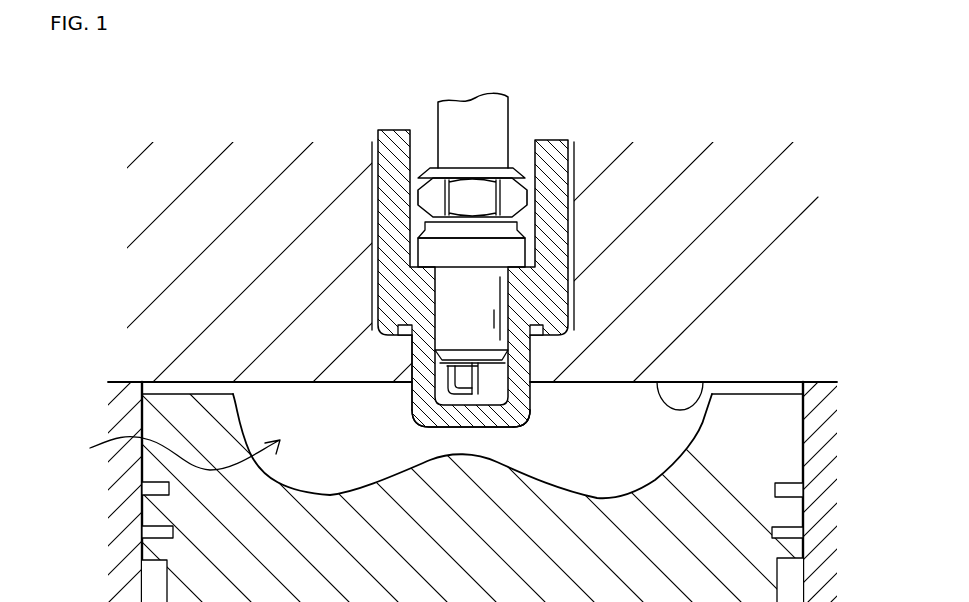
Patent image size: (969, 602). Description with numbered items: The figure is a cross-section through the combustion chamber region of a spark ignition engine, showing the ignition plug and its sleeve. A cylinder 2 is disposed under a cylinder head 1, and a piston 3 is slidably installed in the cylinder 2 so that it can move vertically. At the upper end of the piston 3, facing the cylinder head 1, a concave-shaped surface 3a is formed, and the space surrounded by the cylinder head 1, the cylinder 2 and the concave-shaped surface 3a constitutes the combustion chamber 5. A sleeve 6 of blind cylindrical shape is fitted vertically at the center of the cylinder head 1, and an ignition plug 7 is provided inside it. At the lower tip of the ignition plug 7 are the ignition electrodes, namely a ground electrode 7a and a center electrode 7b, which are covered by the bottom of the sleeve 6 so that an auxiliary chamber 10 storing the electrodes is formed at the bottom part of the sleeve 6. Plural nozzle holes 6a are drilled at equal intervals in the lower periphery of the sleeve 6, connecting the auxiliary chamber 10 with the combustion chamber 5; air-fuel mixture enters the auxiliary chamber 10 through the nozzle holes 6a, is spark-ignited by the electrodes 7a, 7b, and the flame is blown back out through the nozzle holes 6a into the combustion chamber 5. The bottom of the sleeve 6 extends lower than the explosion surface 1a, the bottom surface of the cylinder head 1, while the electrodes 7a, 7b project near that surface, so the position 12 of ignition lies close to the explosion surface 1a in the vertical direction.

The cylinder head 1 is at (694, 160).
The explosion surface 1a is at (703, 382).
The cylinder 2 is at (826, 470).
The piston 3 is at (178, 394).
The concave-shaped surface 3a is at (660, 483).
The combustion chamber 5 is at (176, 453).
The sleeve 6 is at (378, 157).
The nozzle holes 6a is at (412, 424).
The ignition plug 7 is at (508, 108).
The ground electrode 7a is at (457, 392).
The center electrode 7b is at (411, 394).
The auxiliary chamber 10 is at (493, 381).
The position of ignition 12 is at (515, 418).